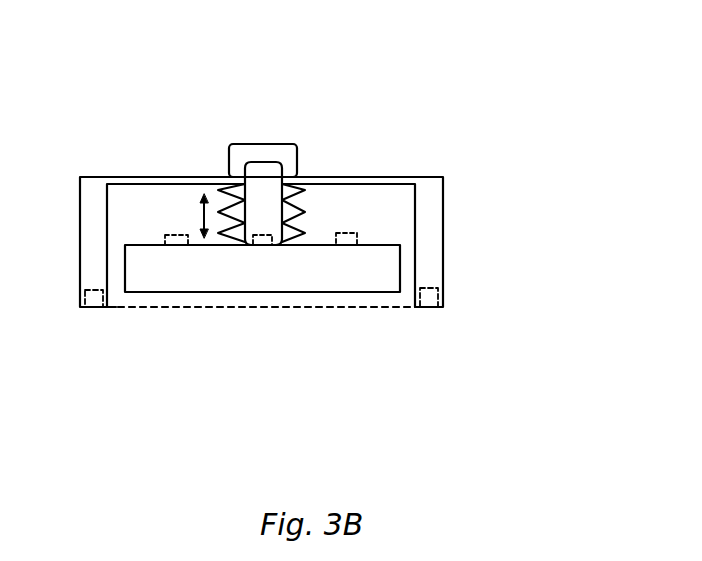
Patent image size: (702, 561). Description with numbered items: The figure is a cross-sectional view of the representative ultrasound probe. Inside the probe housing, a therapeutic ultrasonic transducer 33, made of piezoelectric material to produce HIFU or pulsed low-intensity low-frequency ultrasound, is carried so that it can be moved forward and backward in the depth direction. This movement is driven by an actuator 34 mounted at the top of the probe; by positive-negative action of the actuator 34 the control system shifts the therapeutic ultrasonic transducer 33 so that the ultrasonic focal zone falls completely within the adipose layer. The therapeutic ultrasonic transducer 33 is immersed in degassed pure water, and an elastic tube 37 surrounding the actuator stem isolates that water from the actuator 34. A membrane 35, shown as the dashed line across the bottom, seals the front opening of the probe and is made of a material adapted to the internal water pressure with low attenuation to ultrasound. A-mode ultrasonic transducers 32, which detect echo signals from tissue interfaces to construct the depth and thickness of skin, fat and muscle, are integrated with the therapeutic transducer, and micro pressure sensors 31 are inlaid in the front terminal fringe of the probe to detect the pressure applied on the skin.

The micro pressure sensor 31 is at (438, 293).
The A-mode ultrasonic transducer 32 is at (357, 236).
The therapeutic ultrasonic transducer 33 is at (148, 245).
The actuator 34 is at (275, 143).
The membrane 35 is at (310, 308).
The elastic tube 37 is at (305, 213).